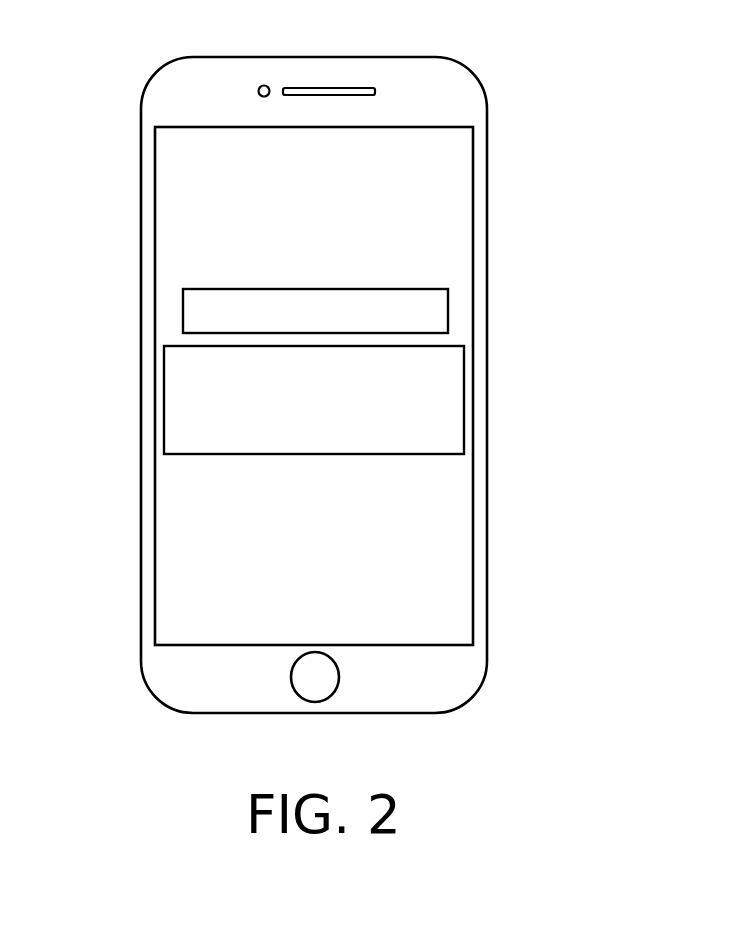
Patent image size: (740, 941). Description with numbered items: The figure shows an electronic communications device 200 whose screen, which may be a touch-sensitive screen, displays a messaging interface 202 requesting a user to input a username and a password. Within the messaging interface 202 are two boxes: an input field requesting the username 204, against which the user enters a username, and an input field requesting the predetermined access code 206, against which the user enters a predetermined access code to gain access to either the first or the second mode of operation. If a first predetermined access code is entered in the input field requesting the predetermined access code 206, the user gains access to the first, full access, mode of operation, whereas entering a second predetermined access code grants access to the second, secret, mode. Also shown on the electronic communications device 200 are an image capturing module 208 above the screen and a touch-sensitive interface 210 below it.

The electronic communications device 200 is at (478, 78).
The messaging interface 202 is at (448, 207).
The input field requesting the username 204 is at (448, 314).
The input field requesting the predetermined access code 206 is at (461, 384).
The image capturing module 208 is at (257, 93).
The touch-sensitive interface 210 is at (289, 692).